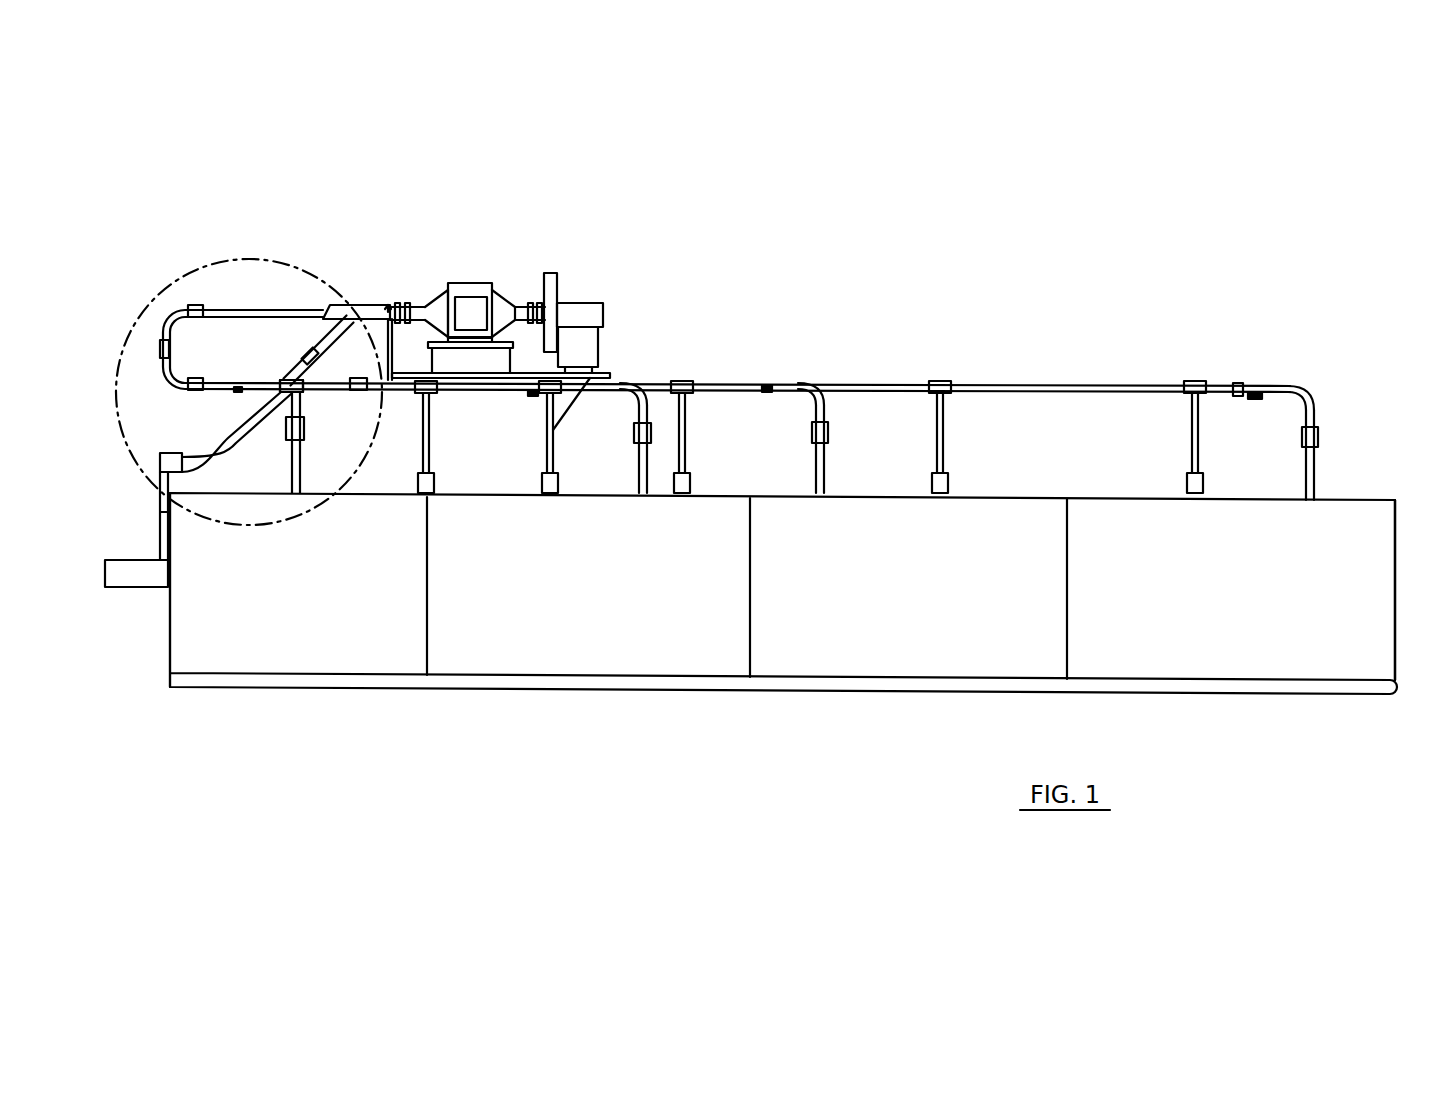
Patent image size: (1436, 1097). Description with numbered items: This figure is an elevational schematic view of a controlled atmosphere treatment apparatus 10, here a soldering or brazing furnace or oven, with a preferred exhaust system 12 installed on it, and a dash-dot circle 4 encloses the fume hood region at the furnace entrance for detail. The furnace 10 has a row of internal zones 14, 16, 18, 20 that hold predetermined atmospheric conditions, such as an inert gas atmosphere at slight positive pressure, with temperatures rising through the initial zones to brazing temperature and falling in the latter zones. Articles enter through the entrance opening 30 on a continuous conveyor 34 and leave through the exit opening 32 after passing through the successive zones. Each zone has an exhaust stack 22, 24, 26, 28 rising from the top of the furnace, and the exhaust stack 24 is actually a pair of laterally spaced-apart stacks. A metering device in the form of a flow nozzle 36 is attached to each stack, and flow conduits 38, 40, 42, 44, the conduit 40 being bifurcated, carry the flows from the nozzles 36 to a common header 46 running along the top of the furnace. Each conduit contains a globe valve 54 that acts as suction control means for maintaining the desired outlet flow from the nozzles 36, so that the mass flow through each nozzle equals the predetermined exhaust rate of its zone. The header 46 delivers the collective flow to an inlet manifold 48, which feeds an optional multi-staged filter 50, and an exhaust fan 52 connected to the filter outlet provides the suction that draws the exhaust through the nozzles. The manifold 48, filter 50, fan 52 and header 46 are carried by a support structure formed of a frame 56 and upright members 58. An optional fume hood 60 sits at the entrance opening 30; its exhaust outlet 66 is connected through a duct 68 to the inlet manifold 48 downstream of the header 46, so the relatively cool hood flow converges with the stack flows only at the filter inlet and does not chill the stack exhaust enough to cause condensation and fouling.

The detail circle 4 is at (278, 258).
The controlled atmosphere treatment apparatus 10 is at (1339, 479).
The exhaust system 12 is at (693, 362).
The internal zone 14 is at (285, 648).
The internal zone 16 is at (590, 648).
The internal zone 18 is at (912, 648).
The internal zone 20 is at (1237, 652).
The exhaust stack 22 is at (292, 468).
The exhaust stack 24 is at (637, 465).
The exhaust stack 26 is at (813, 467).
The exhaust stack 28 is at (1303, 472).
The entrance opening 30 is at (152, 542).
The exit opening 32 is at (1403, 537).
The continuous conveyor 34 is at (132, 557).
The flow nozzle 36 is at (303, 433).
The flow conduit 38 is at (302, 412).
The flow conduit 40 is at (637, 403).
The flow conduit 42 is at (812, 398).
The flow conduit 44 is at (1310, 398).
The common header 46 is at (1037, 388).
The inlet manifold 48 is at (367, 303).
The multi-staged filter 50 is at (470, 288).
The exhaust fan 52 is at (558, 292).
The globe valve 54 is at (238, 383).
The frame 56 is at (610, 377).
The upright member 58 is at (429, 448).
The fume hood 60 is at (158, 493).
The exhaust outlet 66 is at (180, 452).
The duct 68 is at (247, 417).